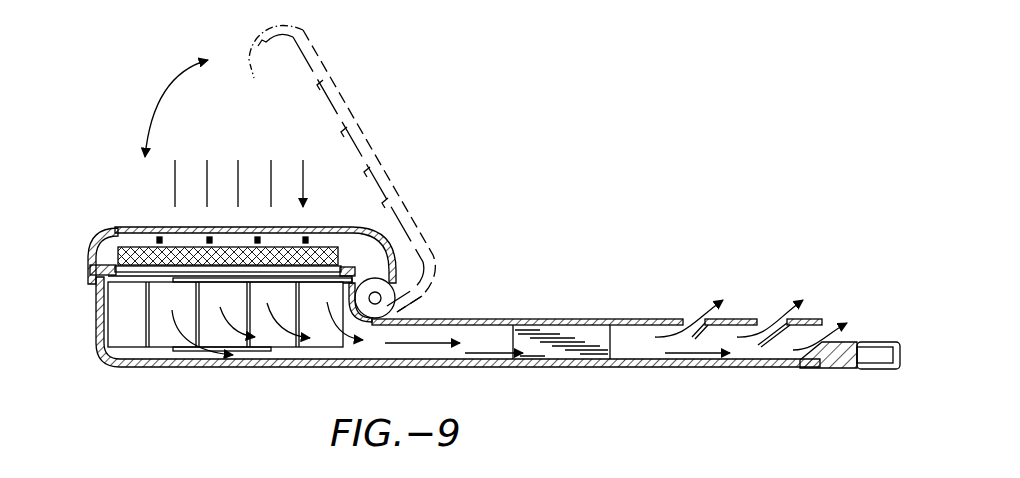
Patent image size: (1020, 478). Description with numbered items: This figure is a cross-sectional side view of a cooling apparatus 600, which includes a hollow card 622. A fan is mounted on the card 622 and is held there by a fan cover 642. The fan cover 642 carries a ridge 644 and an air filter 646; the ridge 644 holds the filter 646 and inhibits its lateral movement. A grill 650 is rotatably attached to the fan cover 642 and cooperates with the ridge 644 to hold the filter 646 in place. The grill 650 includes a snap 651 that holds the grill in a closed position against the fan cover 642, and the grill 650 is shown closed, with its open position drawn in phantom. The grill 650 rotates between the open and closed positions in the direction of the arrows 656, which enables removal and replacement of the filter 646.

The cooling apparatus 600 is at (670, 210).
The hollow card 622 is at (612, 320).
The fan cover 642 is at (85, 280).
The ridge 644 is at (100, 238).
The air filter 646 is at (112, 229).
The grill 650 is at (140, 227).
The snap 651 is at (271, 65).
The arrows 656 is at (160, 97).